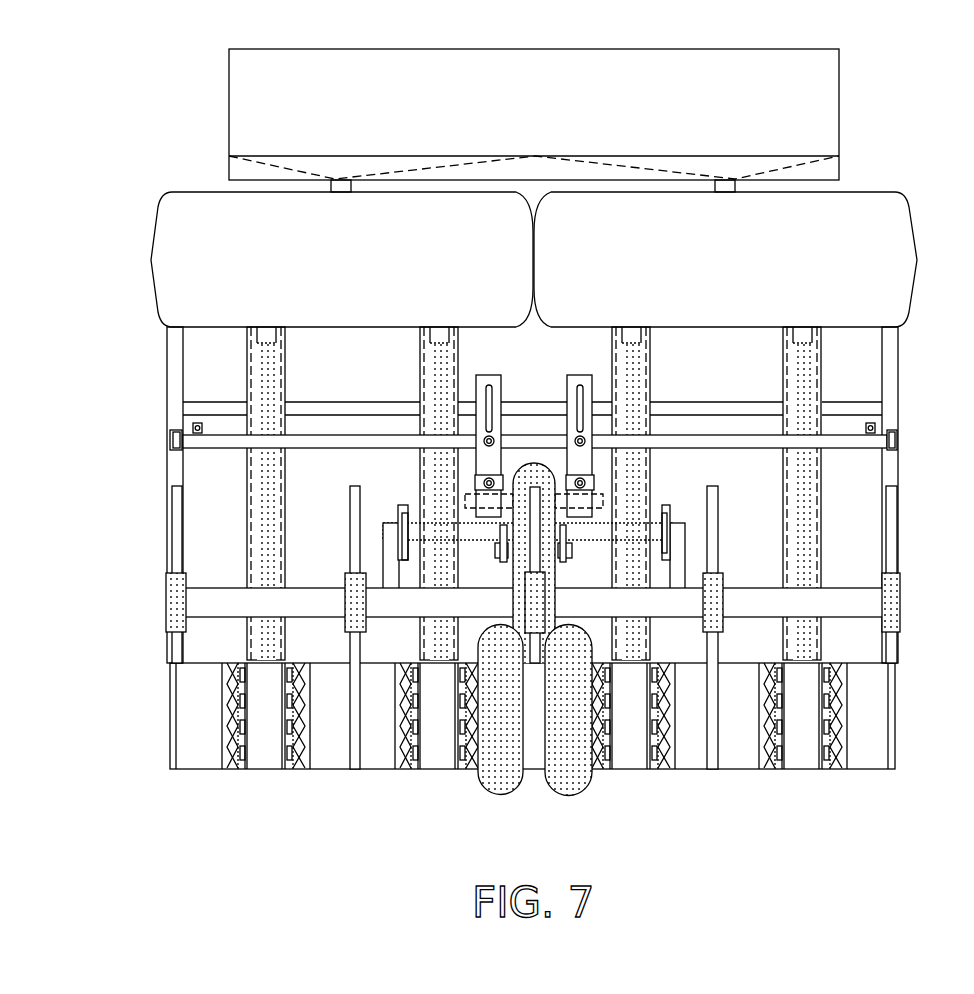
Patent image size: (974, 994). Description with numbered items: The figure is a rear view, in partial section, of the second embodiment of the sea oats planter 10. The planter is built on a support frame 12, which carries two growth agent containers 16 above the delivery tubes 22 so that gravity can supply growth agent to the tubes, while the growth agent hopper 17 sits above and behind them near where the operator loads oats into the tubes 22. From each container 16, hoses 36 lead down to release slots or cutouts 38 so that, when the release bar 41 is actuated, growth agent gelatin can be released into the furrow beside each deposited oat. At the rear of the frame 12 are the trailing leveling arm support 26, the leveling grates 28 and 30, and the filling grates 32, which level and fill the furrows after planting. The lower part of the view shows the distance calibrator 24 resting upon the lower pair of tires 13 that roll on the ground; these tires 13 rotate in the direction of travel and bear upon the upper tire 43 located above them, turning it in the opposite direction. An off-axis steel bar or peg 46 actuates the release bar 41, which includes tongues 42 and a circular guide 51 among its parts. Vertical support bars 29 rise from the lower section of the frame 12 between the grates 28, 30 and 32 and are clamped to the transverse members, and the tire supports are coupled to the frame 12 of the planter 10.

The sea oats planter 10 is at (95, 457).
The support frame 12 is at (165, 360).
The lower pair of tires 13 is at (502, 797).
The growth agent containers 16 is at (534, 259).
The growth agent hopper 17 is at (225, 127).
The delivery tubes 22 is at (418, 362).
The distance calibrator 24 is at (562, 575).
The trailing leveling arm support 26 is at (203, 598).
The leveling grates 28 is at (378, 772).
The vertical support bars 29 is at (350, 525).
The leveling grates 30 is at (195, 772).
The filling grates 32 is at (297, 770).
The hoses 36 is at (268, 575).
The release slot or cutouts 38 is at (270, 705).
The release bar 41 is at (845, 442).
The tongues 42 is at (262, 455).
The upper tire 43 is at (540, 465).
The off-axis steel bar or peg 46 is at (465, 500).
The circular guide 51 is at (180, 440).